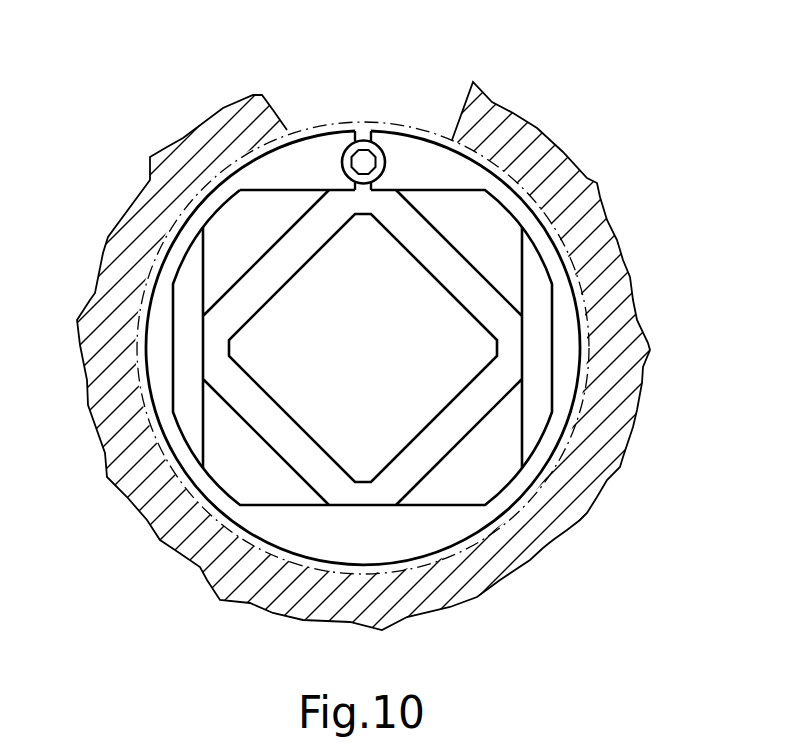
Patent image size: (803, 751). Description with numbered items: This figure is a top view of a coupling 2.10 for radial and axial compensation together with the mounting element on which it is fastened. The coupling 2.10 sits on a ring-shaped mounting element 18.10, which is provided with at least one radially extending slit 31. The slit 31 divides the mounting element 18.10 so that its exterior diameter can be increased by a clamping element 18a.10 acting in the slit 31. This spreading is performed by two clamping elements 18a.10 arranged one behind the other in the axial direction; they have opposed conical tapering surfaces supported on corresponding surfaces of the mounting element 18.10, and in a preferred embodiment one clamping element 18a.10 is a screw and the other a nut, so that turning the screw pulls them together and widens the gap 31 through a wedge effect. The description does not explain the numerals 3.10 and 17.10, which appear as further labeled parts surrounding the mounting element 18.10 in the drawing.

The housing 3.10 is at (155, 197).
The tube 17.10 is at (172, 453).
The mounting element 18.10 is at (567, 300).
The clamping element 18a.10 is at (382, 153).
The slit 31 is at (363, 186).
The coupling 2.10 is at (455, 287).